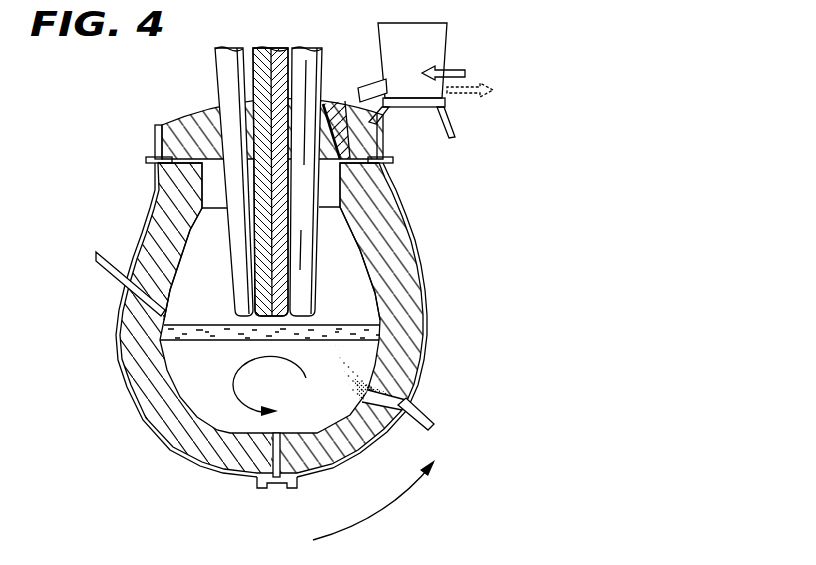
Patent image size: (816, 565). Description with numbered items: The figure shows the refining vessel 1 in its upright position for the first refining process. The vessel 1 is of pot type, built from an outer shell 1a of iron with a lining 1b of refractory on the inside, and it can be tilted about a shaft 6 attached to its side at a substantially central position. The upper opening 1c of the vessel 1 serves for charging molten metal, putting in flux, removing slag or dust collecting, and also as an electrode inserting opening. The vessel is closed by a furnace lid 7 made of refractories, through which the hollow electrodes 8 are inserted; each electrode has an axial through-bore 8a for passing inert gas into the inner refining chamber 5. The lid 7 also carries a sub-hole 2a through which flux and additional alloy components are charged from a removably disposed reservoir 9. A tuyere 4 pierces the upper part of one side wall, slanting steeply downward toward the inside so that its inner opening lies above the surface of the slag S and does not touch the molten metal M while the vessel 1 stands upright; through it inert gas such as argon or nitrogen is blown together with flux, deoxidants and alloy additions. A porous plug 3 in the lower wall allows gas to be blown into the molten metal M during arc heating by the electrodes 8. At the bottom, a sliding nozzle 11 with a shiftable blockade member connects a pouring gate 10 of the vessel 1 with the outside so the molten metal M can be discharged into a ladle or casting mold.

The refining vessel 1 is at (305, 317).
The outer shell 1a is at (428, 311).
The lining 1b is at (410, 352).
The upper opening 1c is at (340, 181).
The sub-hole 2a is at (353, 108).
The porous plug 3 is at (405, 399).
The tuyere 4 is at (114, 284).
The inner refining chamber 5 is at (352, 293).
The shaft 6 is at (248, 314).
The furnace lid 7 is at (193, 123).
The hollow electrodes 8 is at (284, 58).
The axial through-bore 8a is at (268, 54).
The reservoir 9 is at (438, 46).
The pouring gate 10 is at (281, 431).
The sliding nozzle 11 is at (272, 487).
The slag S is at (270, 314).
The molten metal M is at (216, 381).